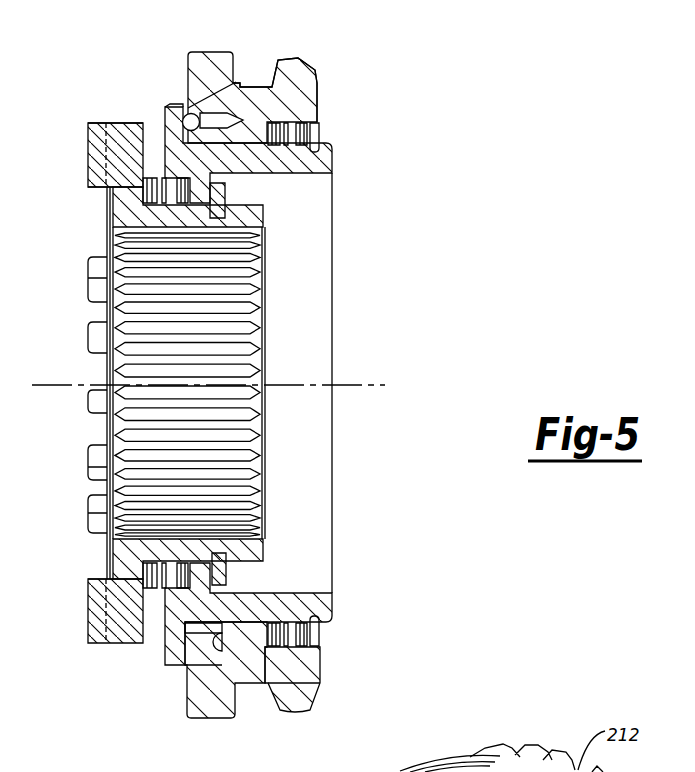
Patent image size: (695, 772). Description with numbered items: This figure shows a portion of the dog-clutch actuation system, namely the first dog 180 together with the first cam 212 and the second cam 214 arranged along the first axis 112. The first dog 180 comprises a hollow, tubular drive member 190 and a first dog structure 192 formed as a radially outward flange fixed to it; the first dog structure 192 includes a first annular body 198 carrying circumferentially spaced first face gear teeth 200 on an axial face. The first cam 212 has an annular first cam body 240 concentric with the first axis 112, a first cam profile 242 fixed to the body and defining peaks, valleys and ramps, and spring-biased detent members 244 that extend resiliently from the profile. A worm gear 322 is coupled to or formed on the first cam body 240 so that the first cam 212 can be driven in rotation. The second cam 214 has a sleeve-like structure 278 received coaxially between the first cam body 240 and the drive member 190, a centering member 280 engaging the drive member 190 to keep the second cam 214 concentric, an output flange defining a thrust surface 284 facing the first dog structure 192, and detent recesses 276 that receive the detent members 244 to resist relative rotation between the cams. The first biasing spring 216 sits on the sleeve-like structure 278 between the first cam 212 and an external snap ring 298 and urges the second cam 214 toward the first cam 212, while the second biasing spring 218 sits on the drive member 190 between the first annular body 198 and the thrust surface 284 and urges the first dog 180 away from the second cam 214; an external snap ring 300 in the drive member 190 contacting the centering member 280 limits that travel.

The first axis 112 is at (385, 380).
The first dog 180 is at (128, 562).
The drive member 190 is at (157, 213).
The first dog structure 192 is at (96, 170).
The first annular body 198 is at (115, 127).
The first face gear teeth 200 is at (95, 633).
The first cam 212 is at (203, 62).
The second cam 214 is at (315, 490).
The first biasing spring 216 is at (300, 122).
The second biasing spring 218 is at (143, 583).
The first cam body 240 is at (241, 95).
The first cam profile 242 is at (212, 645).
The detent members 244 is at (198, 116).
The detent recesses 276 is at (182, 118).
The sleeve-like structure 278 is at (300, 163).
The centering member 280 is at (198, 587).
The thrust surface 284 is at (225, 196).
The external snap ring 298 is at (322, 136).
The external snap ring 300 is at (227, 572).
The worm gear 322 is at (297, 698).